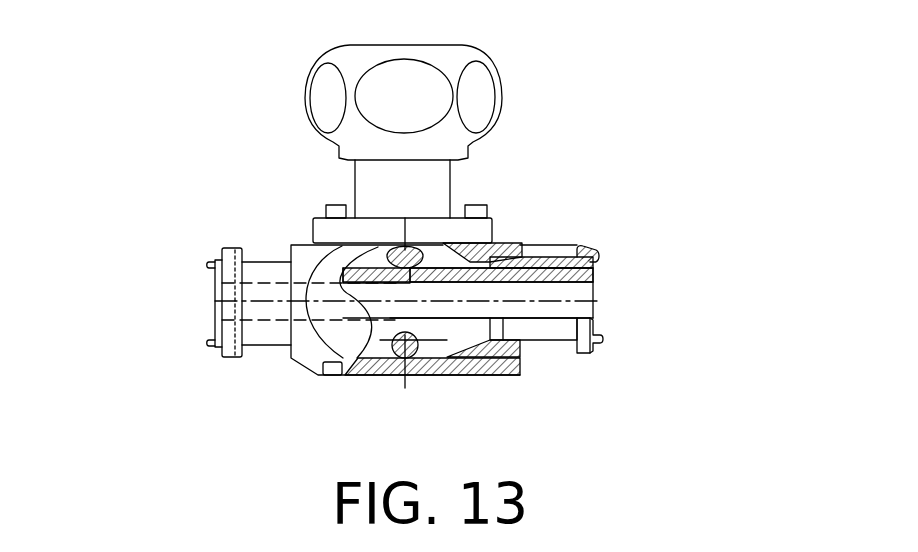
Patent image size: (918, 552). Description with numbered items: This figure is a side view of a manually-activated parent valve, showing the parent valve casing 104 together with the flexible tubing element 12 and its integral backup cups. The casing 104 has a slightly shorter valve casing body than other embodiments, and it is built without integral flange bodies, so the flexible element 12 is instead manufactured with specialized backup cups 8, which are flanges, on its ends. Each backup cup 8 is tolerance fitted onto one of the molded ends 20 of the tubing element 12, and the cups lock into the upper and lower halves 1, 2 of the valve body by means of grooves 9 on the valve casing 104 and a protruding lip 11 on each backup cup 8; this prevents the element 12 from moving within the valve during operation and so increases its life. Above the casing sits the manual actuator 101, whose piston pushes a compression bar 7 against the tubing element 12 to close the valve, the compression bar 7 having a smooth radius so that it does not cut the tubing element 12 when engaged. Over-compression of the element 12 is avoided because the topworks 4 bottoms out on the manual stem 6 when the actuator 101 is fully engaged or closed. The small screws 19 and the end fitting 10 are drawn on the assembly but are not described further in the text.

The upper half of the valve body 1 is at (300, 255).
The lower half of the valve body 2 is at (312, 348).
The topworks 4 is at (452, 57).
The manual stem 6 is at (413, 188).
The compression bar 7 is at (462, 248).
The backup cup 8 is at (548, 332).
The groove 9 is at (522, 244).
The end nut 10 is at (605, 340).
The protruding lip 11 is at (595, 248).
The flexible tubing element 12 is at (595, 270).
The fastening screw 19 is at (325, 207).
The molded end of the tubing element 20 is at (220, 315).
The manual actuator 101 is at (513, 108).
The parent valve casing 104 is at (770, 193).